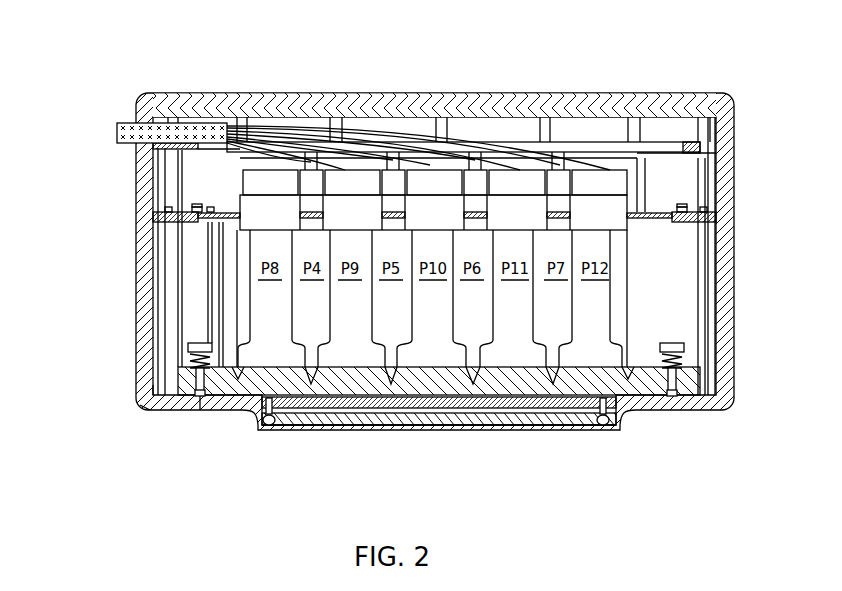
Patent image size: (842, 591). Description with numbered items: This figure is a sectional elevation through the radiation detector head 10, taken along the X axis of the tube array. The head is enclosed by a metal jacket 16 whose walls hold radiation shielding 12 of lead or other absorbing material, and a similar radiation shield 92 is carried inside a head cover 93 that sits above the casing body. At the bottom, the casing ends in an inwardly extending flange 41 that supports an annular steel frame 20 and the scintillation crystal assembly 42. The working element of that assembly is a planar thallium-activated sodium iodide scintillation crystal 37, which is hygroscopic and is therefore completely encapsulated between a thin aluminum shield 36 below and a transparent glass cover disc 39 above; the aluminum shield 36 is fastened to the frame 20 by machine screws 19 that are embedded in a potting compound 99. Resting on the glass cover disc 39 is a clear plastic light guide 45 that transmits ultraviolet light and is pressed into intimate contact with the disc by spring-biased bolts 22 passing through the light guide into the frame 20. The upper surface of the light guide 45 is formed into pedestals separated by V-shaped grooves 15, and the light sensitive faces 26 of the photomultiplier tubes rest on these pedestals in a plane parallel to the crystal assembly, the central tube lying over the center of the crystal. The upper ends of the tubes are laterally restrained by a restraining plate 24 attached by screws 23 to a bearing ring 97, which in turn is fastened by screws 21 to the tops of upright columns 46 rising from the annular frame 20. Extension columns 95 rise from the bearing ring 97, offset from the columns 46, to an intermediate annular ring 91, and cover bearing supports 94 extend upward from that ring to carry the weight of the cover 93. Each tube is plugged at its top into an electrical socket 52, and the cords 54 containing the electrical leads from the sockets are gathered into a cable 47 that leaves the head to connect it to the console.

The detector head 10 is at (108, 272).
The radiation shielding 12 is at (140, 342).
The V-shaped grooves 15 is at (392, 378).
The metal jacket 16 is at (150, 393).
The machine screws 19 is at (268, 428).
The annular steel frame 20 is at (218, 402).
The screws 21 is at (165, 208).
The spring-biased bolts 22 is at (198, 342).
The screws 23 is at (196, 206).
The restraining plate 24 is at (712, 182).
The light sensitive faces 26 is at (340, 372).
The aluminum shield 36 is at (352, 430).
The scintillation crystal 37 is at (540, 426).
The glass cover disc 39 is at (312, 409).
The inwardly extending flange 41 is at (152, 412).
The scintillation crystal assembly 42 is at (382, 468).
The light guide 45 is at (426, 386).
The upright columns 46 is at (208, 272).
The cable 47 is at (118, 125).
The electrical socket 52 is at (433, 191).
The cords 54 is at (548, 172).
The intermediate annular ring 91 is at (152, 148).
The radiation shield 92 is at (443, 116).
The head cover 93 is at (400, 94).
The cover bearing supports 94 is at (335, 116).
The extension columns 95 is at (218, 172).
The bearing ring 97 is at (178, 222).
The potting compound 99 is at (268, 427).